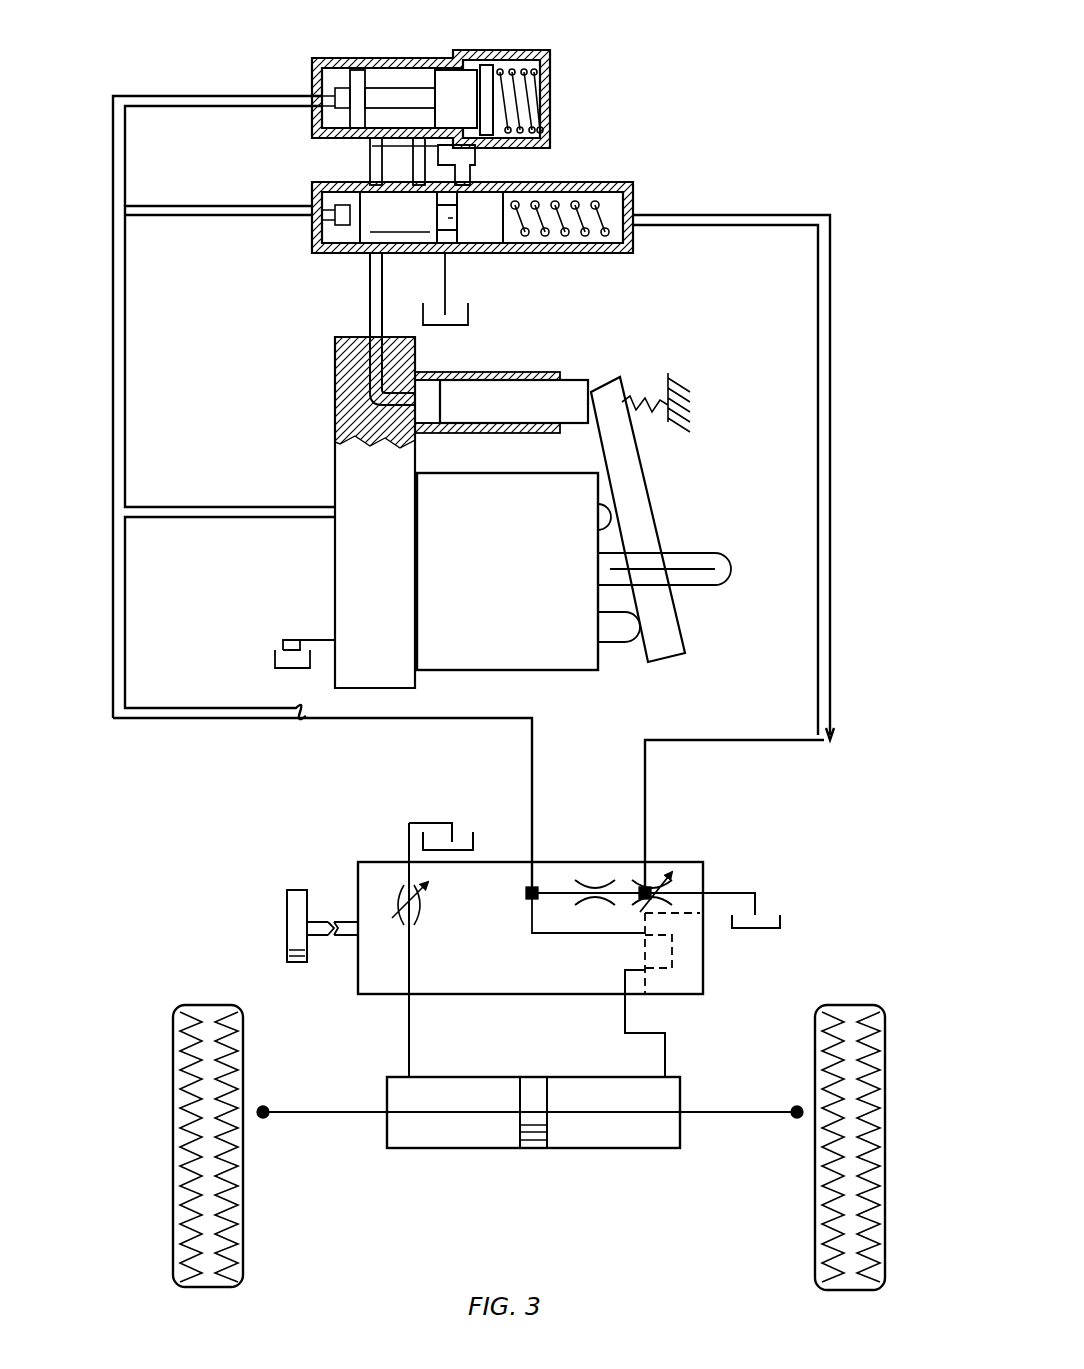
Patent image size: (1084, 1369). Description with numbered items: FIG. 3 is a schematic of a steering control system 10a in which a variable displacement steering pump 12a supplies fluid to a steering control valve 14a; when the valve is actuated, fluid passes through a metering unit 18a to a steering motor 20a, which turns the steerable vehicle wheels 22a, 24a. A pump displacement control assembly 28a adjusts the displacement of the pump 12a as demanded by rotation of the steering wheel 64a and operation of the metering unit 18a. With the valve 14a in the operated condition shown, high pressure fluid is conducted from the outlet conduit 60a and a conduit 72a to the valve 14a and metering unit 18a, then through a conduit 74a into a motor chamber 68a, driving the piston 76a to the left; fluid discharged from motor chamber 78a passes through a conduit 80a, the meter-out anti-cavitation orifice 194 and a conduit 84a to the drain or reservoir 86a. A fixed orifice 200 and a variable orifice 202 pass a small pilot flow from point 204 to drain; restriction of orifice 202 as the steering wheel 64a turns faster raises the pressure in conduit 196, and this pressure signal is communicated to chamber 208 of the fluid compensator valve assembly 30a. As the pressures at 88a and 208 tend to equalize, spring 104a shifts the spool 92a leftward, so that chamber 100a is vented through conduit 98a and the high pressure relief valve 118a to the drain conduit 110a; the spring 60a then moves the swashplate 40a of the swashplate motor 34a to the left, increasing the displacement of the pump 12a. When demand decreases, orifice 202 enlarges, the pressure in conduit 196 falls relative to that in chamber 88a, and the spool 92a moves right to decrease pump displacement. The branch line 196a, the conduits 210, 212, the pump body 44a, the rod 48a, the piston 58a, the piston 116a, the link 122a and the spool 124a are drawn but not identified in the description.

The steering control system 10a is at (880, 97).
The variable displacement steering pump 12a is at (705, 655).
The steering control valve 14a is at (370, 968).
The metering unit 18a is at (688, 945).
The steering motor 20a is at (530, 1113).
The steerable vehicle wheel 22a is at (182, 1108).
The steerable vehicle wheel 24a is at (872, 1148).
The pump displacement control assembly 28a is at (795, 18).
The fluid compensator valve assembly 30a is at (504, 209).
The swashplate motor 34a is at (490, 493).
The swashplate 40a is at (632, 458).
The brake body 44a is at (535, 580).
The push rod 48a is at (708, 556).
The piston 58a is at (530, 392).
The outlet conduit 60a is at (655, 395).
The steering wheel 64a is at (287, 928).
The motor chamber 68a is at (680, 1138).
The conduit 72a is at (125, 596).
The conduit 74a is at (628, 1012).
The piston 76a is at (538, 1150).
The motor chamber 78a is at (390, 1128).
The conduit 80a is at (409, 1030).
The conduit 84a is at (409, 838).
The drain or reservoir 86a is at (470, 836).
The chamber 88a is at (322, 236).
The spool 92a is at (480, 215).
The conduit 98a is at (370, 280).
The swashplate motor cylinder 100a is at (440, 392).
The spring 104a is at (600, 188).
The drain conduit 110a is at (445, 270).
The piston 116a is at (405, 99).
The high pressure relief valve 118a is at (555, 110).
The connecting link 122a is at (370, 150).
The valve spool 124a is at (412, 217).
The metering-out anti-cavitation orifice 194 is at (428, 922).
The conduit 196 is at (830, 272).
The pressure conduit branch 196a is at (645, 762).
The fixed orifice 200 is at (585, 905).
The variable orifice 202 is at (668, 870).
The point 204 is at (526, 893).
The chamber 208 is at (565, 250).
The conduit 210 is at (125, 335).
The conduit 212 is at (215, 186).